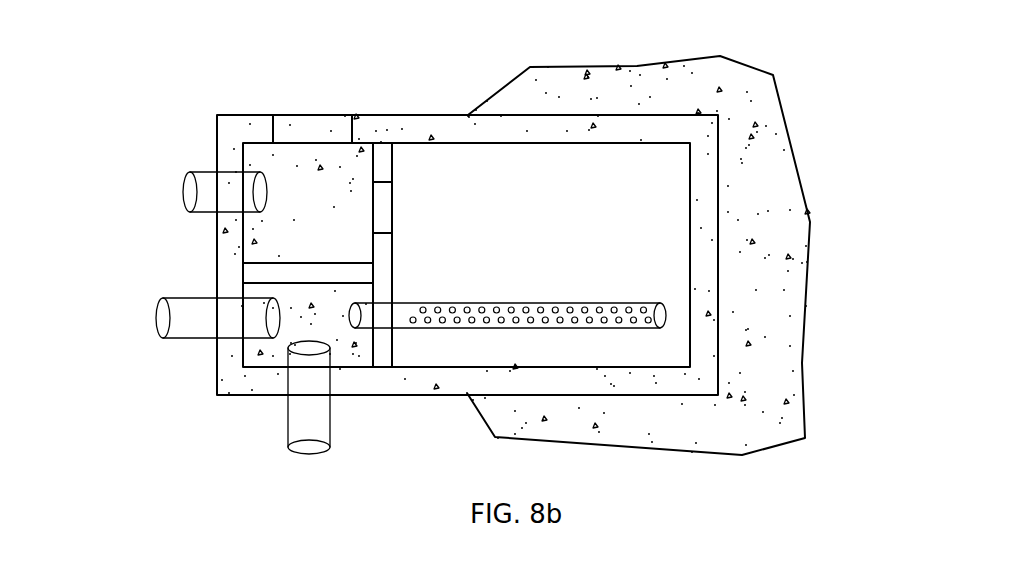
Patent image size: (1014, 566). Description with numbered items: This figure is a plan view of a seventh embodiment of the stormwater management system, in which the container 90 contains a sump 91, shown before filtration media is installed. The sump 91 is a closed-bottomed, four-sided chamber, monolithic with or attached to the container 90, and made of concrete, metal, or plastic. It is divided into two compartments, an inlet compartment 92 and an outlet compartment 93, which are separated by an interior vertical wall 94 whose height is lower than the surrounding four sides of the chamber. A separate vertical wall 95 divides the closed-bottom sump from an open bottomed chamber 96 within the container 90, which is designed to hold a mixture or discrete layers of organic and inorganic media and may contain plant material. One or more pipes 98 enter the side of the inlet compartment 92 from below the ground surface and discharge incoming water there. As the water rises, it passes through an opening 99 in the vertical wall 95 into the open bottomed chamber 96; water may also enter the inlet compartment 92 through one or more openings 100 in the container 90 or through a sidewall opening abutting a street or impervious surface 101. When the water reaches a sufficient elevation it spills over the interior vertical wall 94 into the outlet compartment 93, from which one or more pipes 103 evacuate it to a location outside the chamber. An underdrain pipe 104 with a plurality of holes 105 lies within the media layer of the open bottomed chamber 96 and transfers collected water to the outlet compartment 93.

The container 90 is at (635, 130).
The sump 91 is at (309, 266).
The inlet compartment 92 is at (278, 162).
The outlet compartment 93 is at (272, 348).
The interior vertical wall 94 is at (278, 273).
The separate vertical wall 95 is at (383, 163).
The open bottomed chamber 96 is at (581, 196).
The pipes 98 is at (192, 192).
The opening 99 is at (392, 209).
The openings 100 is at (307, 130).
The street or impervious surface 101 is at (812, 222).
The pipes 103 is at (162, 318).
The underdrain pipe 104 is at (652, 303).
The holes 105 is at (515, 310).